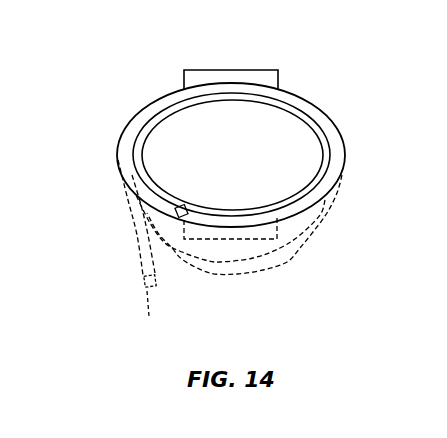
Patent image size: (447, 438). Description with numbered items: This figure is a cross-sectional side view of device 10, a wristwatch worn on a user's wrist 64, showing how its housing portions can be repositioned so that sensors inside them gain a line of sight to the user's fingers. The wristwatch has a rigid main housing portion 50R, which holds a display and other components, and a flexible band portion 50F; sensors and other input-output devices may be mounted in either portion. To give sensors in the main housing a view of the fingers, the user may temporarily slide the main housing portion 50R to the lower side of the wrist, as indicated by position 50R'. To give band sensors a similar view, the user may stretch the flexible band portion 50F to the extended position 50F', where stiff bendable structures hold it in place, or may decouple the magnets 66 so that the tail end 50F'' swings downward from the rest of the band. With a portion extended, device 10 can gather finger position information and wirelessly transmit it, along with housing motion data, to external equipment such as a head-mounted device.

The device 10 is at (98, 66).
The rigid main housing portion 50R is at (267, 77).
The flexible band portion 50F is at (267, 155).
The wrist 64 is at (312, 129).
The magnets 66 is at (181, 205).
The position of main housing portion on lower side of wrist 50R' is at (237, 260).
The extended position of band portion 50F' is at (238, 256).
The tail end of band portion 50F'' is at (105, 241).